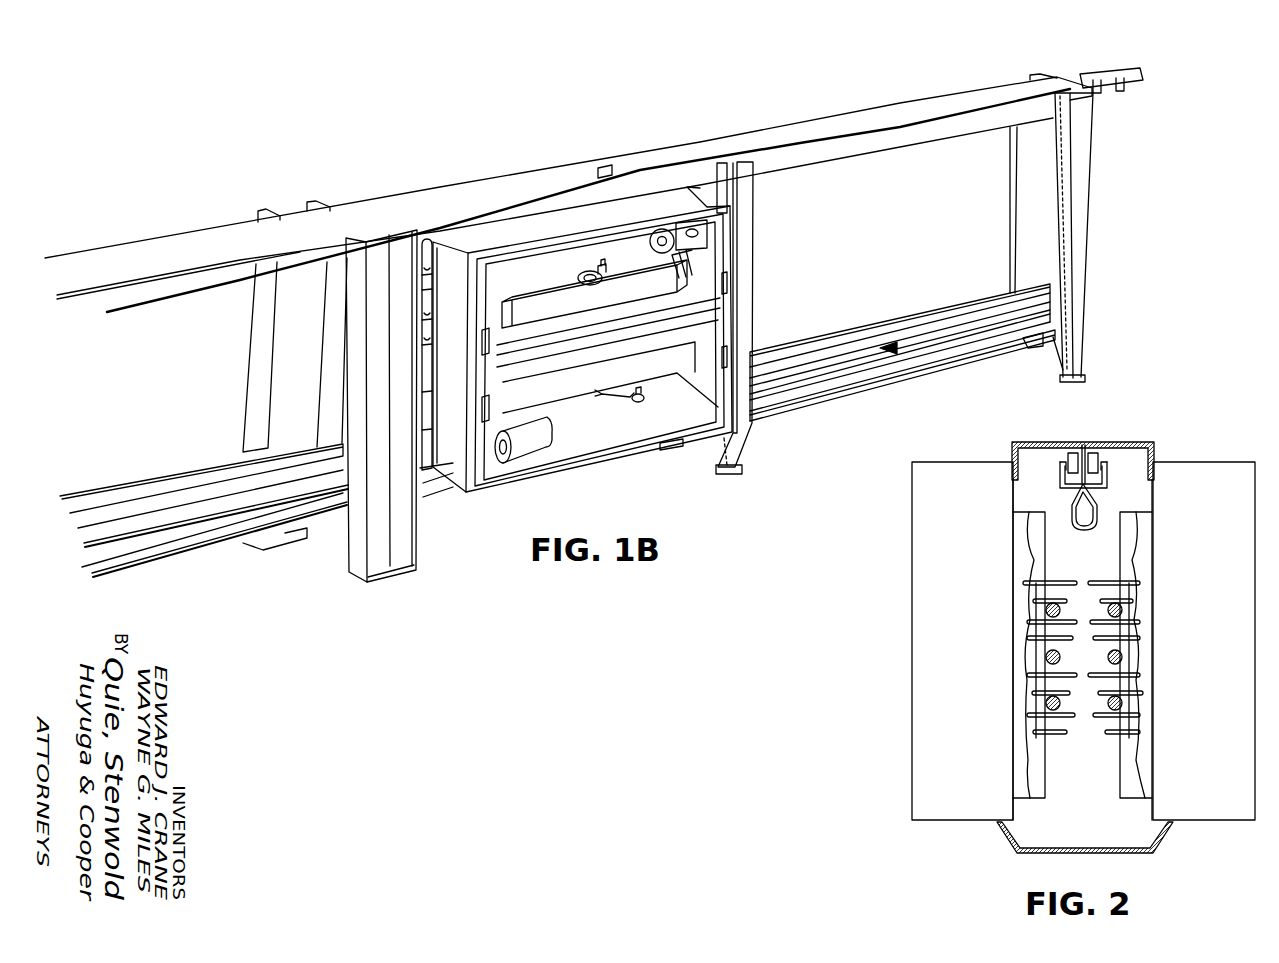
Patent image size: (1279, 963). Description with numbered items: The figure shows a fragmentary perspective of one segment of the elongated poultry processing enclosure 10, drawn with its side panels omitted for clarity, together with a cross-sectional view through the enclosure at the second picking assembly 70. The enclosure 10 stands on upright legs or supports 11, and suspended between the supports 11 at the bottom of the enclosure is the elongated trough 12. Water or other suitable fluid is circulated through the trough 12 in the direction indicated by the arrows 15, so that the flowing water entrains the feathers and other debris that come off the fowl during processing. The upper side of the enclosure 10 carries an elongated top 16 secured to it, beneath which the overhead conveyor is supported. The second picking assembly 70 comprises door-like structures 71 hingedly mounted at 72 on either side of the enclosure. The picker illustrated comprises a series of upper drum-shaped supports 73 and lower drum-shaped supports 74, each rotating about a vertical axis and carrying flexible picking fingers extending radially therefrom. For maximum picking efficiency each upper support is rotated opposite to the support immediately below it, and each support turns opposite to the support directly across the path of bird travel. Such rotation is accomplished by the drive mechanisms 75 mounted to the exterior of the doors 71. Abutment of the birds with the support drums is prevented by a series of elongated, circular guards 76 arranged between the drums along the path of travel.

In FIG. 1B, the poultry processing enclosure 10 is at (575, 108).
In FIG. 2, the poultry processing enclosure 10 is at (1153, 402).
In FIG. 1B, the upright legs or supports 11 is at (1080, 327).
In FIG. 1B, the elongated trough 12 is at (819, 360).
In FIG. 2, the elongated trough 12 is at (1030, 862).
In FIG. 1B, the arrows 15 is at (937, 337).
In FIG. 1B, the elongated top 16 is at (606, 166).
In FIG. 2, the elongated top 16 is at (1085, 442).
In FIG. 1B, the second picking assembly 70 is at (582, 258).
In FIG. 2, the second picking assembly 70 is at (1082, 782).
In FIG. 1B, the door-like structures 71 is at (458, 386).
In FIG. 2, the door-like structures 71 is at (964, 627).
In FIG. 1B, the hinge mounting 72 is at (427, 239).
In FIG. 2, the upper drum-shaped supports 73 is at (1035, 545).
In FIG. 2, the lower drum-shaped supports 74 is at (1025, 703).
In FIG. 1B, the drive mechanisms 75 is at (623, 288).
In FIG. 2, the elongated circular guards 76 is at (1122, 657).